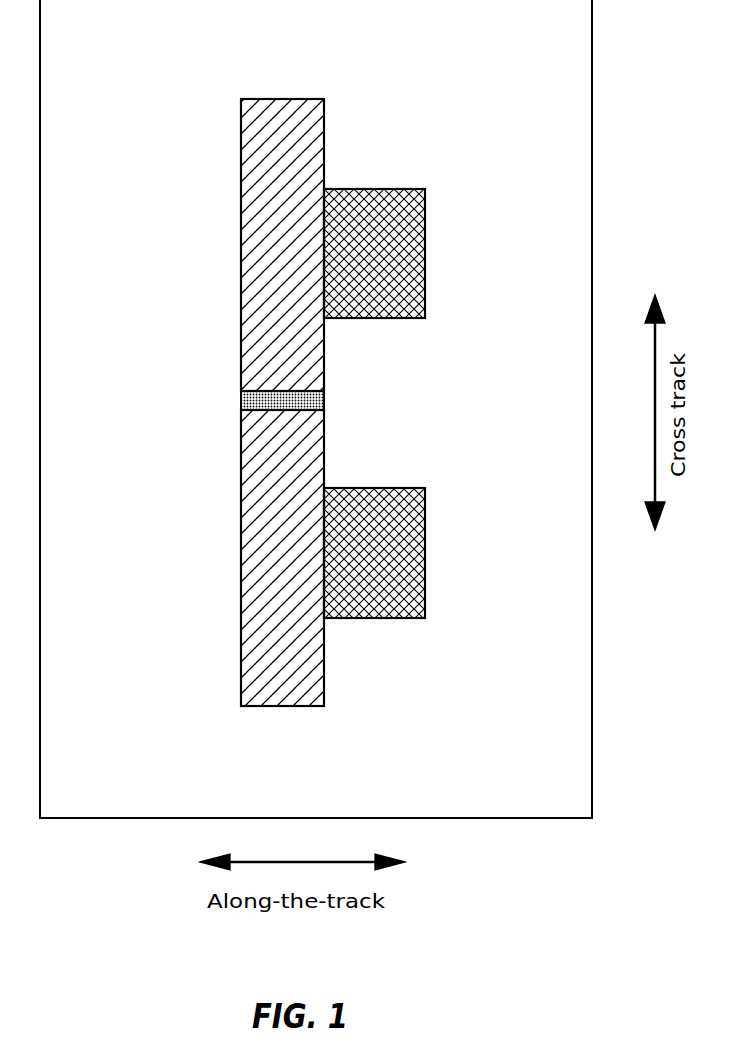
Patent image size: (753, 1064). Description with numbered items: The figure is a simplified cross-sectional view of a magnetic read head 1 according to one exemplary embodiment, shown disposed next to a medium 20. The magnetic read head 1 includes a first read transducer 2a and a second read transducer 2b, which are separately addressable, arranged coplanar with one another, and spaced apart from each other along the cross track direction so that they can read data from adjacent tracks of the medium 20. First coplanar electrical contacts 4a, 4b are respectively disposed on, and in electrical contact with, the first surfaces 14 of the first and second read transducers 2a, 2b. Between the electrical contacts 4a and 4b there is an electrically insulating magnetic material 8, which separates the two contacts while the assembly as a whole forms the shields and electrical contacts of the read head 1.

The magnetic read head 1 is at (306, 399).
The medium 20 is at (109, 30).
The first coplanar electrical contact 4a is at (253, 598).
The first coplanar electrical contact 4b is at (265, 252).
The electrically insulating magnetic material 8 is at (266, 398).
The first surfaces 14 is at (322, 318).
The first read transducer 2a is at (407, 583).
The second read transducer 2b is at (412, 295).